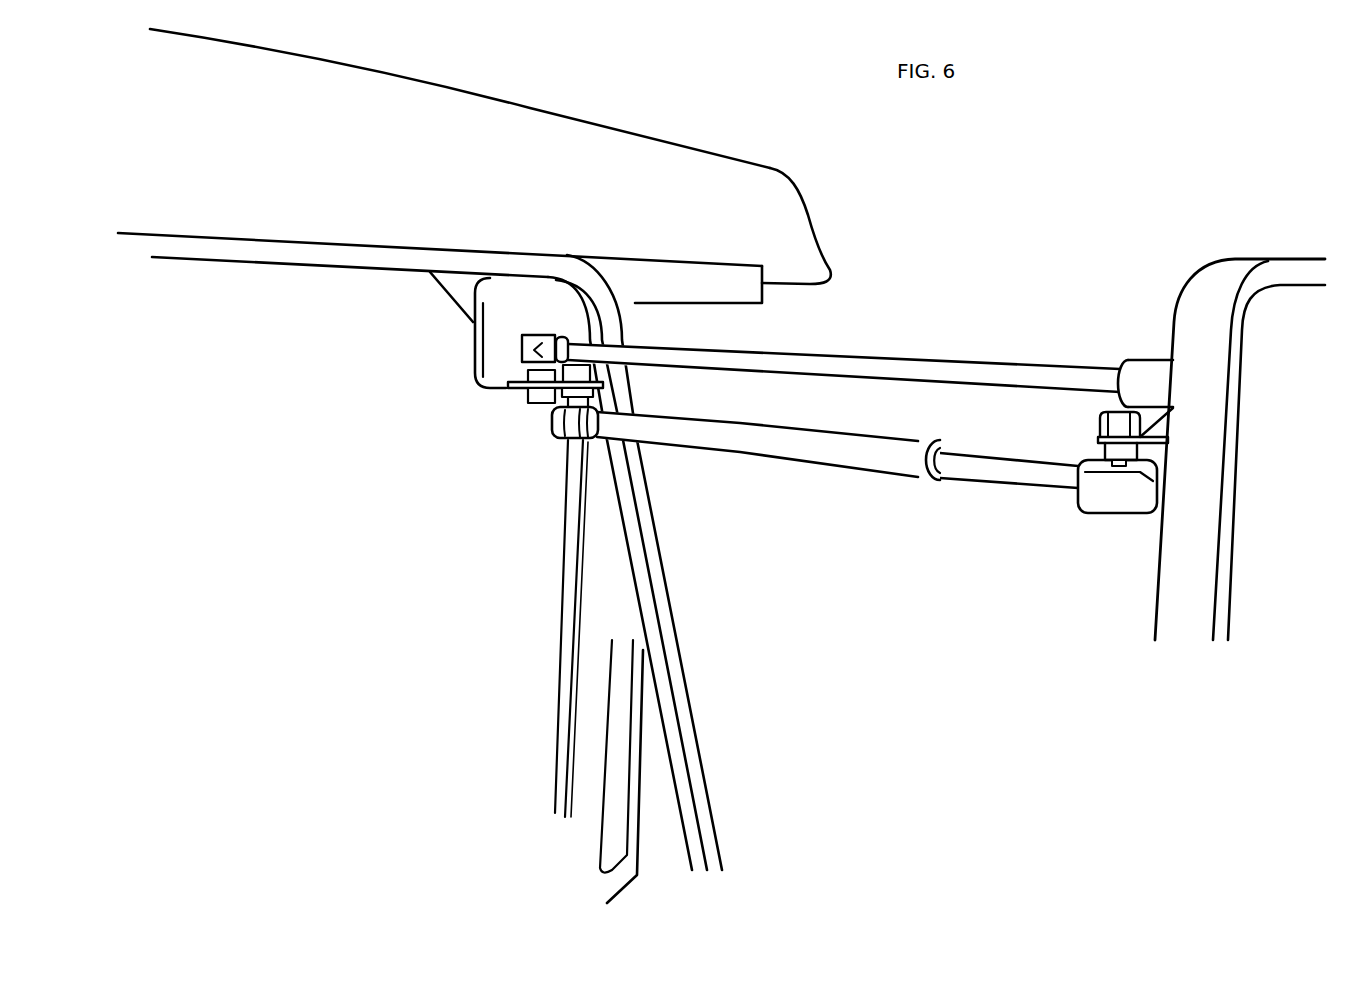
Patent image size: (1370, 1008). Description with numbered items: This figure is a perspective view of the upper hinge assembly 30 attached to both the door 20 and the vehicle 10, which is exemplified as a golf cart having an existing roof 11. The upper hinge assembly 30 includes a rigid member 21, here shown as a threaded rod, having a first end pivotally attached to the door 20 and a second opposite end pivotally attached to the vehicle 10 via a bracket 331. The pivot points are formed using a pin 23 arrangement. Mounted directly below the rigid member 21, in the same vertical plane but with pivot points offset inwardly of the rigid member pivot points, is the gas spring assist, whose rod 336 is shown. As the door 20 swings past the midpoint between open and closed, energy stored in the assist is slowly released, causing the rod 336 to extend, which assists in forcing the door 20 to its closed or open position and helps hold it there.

The vehicle 10 is at (628, 104).
The roof 11 is at (768, 197).
The door 20 is at (1224, 275).
The rigid member 21 is at (925, 370).
The pin 23 is at (527, 371).
The upper hinge assembly 30 is at (947, 509).
The bracket 331 is at (533, 321).
The rod 336 is at (835, 458).